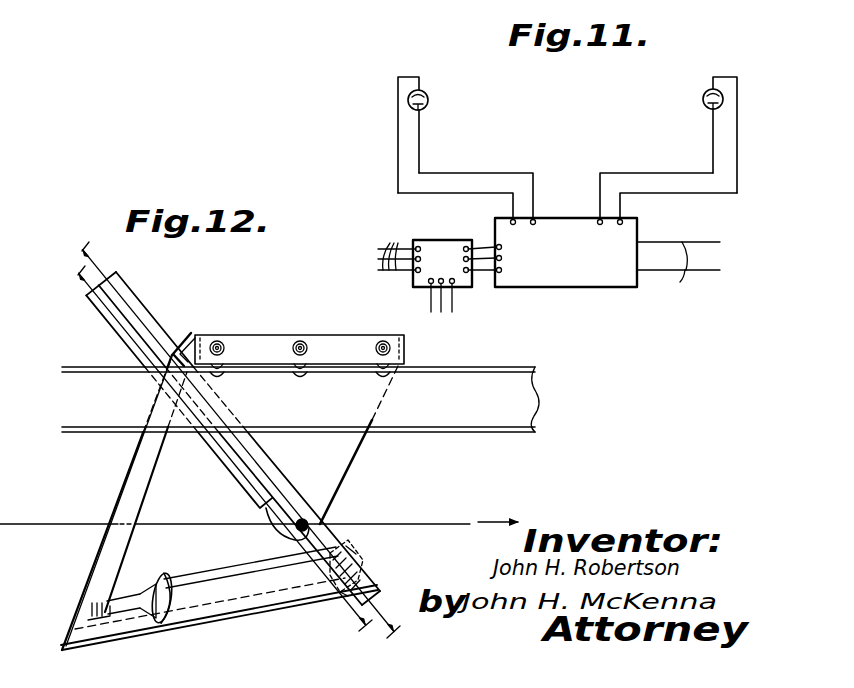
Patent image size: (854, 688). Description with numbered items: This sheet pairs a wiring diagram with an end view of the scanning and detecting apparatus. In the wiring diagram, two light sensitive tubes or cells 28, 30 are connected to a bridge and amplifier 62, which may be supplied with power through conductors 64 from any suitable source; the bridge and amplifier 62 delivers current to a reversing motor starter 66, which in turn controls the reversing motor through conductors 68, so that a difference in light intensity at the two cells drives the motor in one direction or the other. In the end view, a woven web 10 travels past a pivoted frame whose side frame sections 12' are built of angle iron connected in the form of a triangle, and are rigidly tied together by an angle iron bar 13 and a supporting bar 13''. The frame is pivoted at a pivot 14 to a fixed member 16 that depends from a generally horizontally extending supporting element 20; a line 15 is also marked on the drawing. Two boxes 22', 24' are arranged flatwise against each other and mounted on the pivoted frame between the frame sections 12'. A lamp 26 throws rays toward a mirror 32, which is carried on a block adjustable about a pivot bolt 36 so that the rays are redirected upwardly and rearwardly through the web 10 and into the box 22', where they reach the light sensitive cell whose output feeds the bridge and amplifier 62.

In FIG. 12, the web 10 is at (412, 521).
In FIG. 12, the frame sections 12' is at (219, 502).
In FIG. 12, the angle iron bar 13 is at (184, 336).
In FIG. 12, the supporting bar 13'' is at (366, 566).
In FIG. 12, the pivot 14 is at (335, 505).
In FIG. 12, the section line 15- 15 is at (220, 443).
In FIG. 12, the fixed member 16 is at (348, 459).
In FIG. 12, the supporting elements 20 is at (476, 378).
In FIG. 12, the box 22' is at (189, 417).
In FIG. 12, the box 24' is at (233, 438).
In FIG. 12, the lamp 26 is at (158, 572).
In FIG. 11, the light sensitive tube or cell 28 is at (428, 97).
In FIG. 11, the light sensitive tube or cell 30 is at (703, 95).
In FIG. 12, the mirror 32 is at (330, 596).
In FIG. 12, the pivot bolt 36 is at (356, 554).
In FIG. 11, the bridge and amplifier 62 is at (566, 216).
In FIG. 11, the conductors 64 is at (678, 274).
In FIG. 11, the reversing motor starter 66 is at (442, 247).
In FIG. 11, the conductors 68 is at (396, 243).